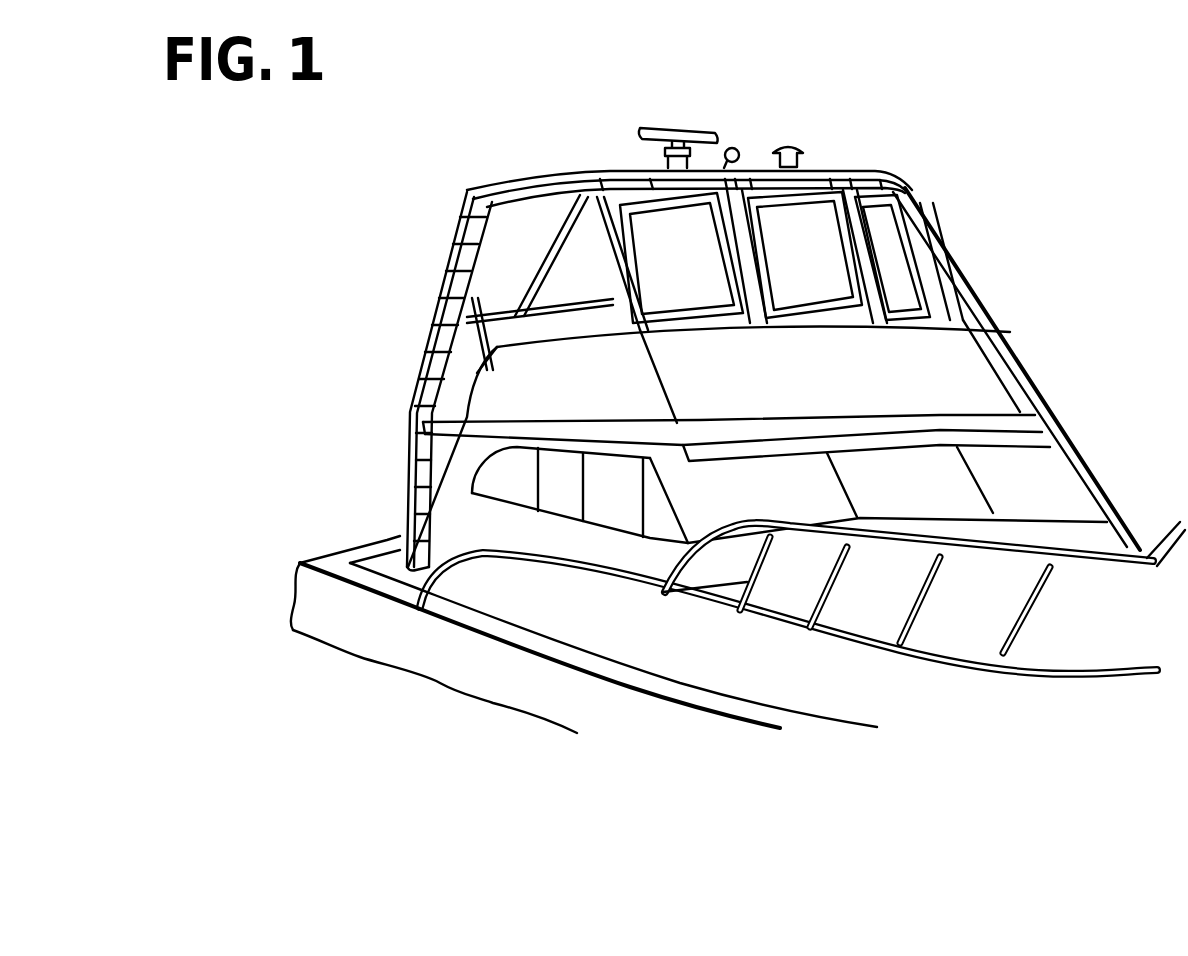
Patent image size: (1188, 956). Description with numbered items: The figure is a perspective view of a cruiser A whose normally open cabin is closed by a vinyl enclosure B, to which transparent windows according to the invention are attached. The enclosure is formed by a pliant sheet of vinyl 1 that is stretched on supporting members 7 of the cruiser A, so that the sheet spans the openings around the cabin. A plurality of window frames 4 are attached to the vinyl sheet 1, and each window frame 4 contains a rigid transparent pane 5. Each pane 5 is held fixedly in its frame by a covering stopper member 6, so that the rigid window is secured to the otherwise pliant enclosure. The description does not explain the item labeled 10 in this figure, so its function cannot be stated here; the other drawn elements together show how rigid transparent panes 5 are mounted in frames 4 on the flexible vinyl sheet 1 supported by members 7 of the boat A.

The pliant sheet of vinyl 1 is at (608, 200).
The window frame 4 is at (637, 192).
The rigid transparent pane 5 is at (667, 272).
The covering stopper member 6 is at (662, 329).
The supporting member 7 is at (626, 327).
The corner pillar 10 is at (905, 226).
The cruiser A is at (507, 690).
The vinyl enclosure B is at (933, 323).